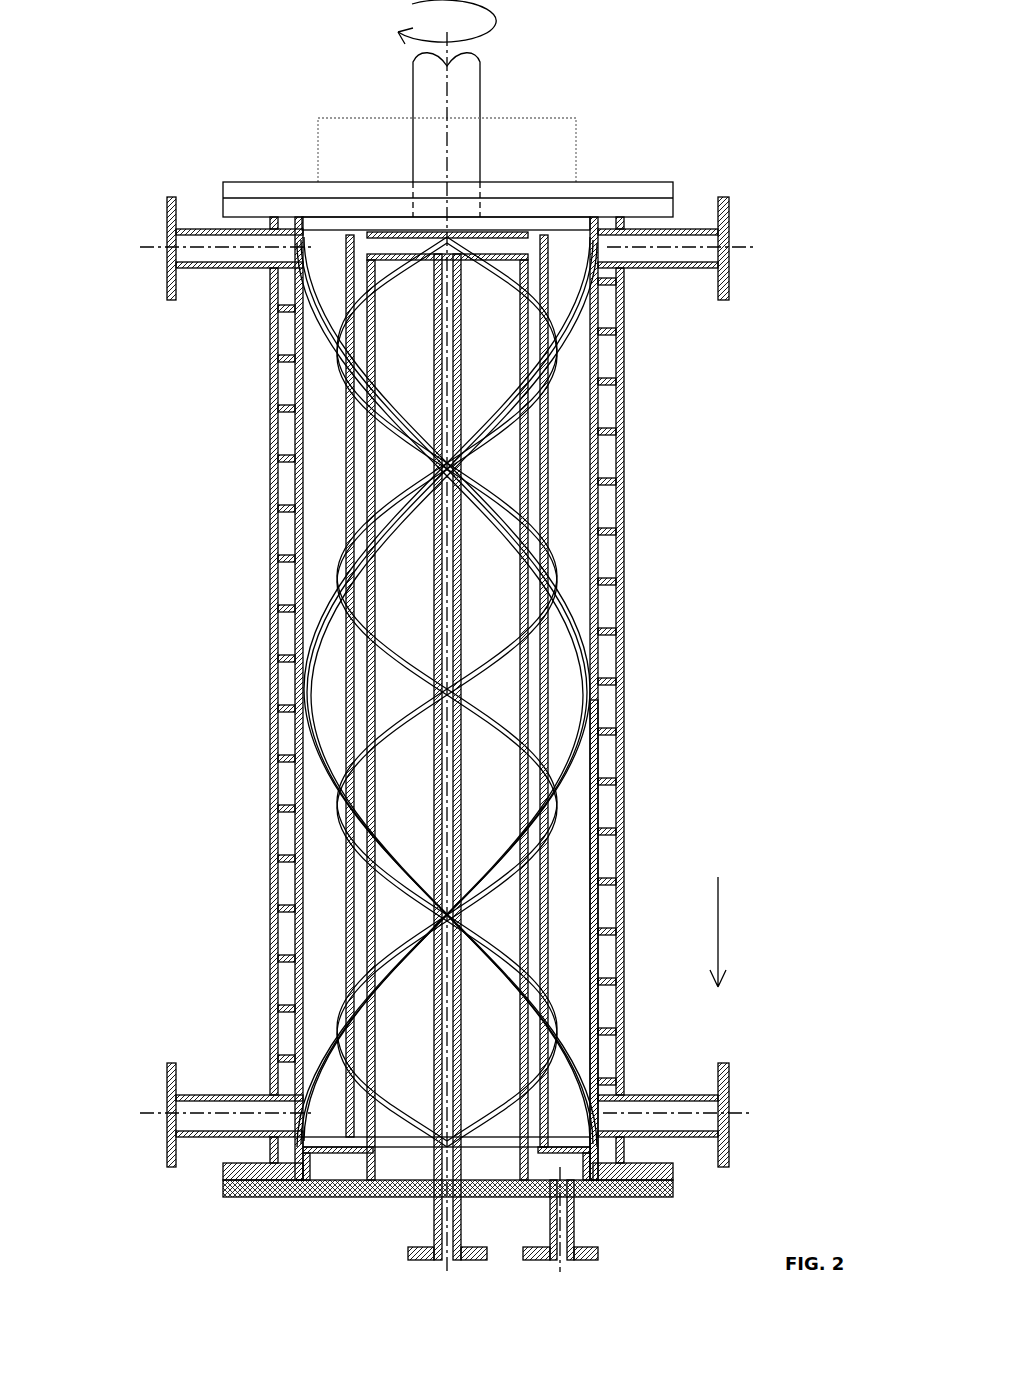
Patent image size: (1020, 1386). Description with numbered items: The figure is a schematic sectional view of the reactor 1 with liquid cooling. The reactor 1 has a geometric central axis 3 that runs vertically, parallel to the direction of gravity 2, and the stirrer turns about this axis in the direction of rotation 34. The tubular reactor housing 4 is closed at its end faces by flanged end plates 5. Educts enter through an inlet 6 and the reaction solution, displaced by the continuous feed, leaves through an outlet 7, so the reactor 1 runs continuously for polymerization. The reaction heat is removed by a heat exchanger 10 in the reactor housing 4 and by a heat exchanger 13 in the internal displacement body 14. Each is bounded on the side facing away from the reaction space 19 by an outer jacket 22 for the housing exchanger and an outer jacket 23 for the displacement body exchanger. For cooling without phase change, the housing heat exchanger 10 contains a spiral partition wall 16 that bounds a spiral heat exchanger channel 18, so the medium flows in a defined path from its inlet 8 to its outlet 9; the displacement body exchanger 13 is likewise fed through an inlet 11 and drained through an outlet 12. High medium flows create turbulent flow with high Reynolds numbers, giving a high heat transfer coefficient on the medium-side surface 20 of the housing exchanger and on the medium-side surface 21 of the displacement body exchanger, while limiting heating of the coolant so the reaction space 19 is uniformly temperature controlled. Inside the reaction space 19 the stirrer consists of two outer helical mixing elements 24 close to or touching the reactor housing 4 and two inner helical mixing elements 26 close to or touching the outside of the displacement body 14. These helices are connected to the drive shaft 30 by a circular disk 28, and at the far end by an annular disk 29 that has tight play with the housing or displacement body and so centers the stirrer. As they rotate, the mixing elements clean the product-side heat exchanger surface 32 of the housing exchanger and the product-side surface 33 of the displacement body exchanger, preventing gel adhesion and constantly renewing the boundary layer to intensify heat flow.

The reactor 1 is at (623, 532).
The direction of gravity 2 is at (727, 932).
The geometric central axis 3 is at (445, 140).
The tubular reactor housing 4 is at (593, 355).
The end plates 5 is at (648, 207).
The inlet 6 is at (156, 234).
The outlet 7 is at (155, 1112).
The inlet of heat exchange medium 8 is at (740, 1111).
The outlet of heat exchange medium 9 is at (743, 255).
The heat exchanger in the reactor housing 10 is at (605, 503).
The inlet of heat exchange medium 11 is at (578, 1228).
The outlet of heat exchange medium 12 is at (433, 1228).
The heat exchanger in the displacement body 13 is at (365, 905).
The displacement body 14 is at (345, 452).
The spiral partition wall 16 is at (600, 632).
The spiral heat exchanger channel 18 is at (608, 558).
The reaction space 19 is at (562, 892).
The heat exchanger surface on the heat exchange medium side 20 is at (603, 807).
The heat exchanger surface on the heat exchange medium side 21 is at (540, 708).
The outer jacket 22 is at (272, 628).
The outer jacket 23 is at (370, 862).
The outer helical mixing element 24 is at (310, 683).
The inner helical mixing element 26 is at (340, 572).
The circular disk 28 is at (332, 223).
The annular disk 29 is at (367, 1138).
The drive shaft 30 is at (463, 108).
The heat exchanger surface on the product side 32 is at (593, 448).
The heat exchanger surface on the product side 33 is at (546, 937).
The direction of rotation 34 is at (470, 22).